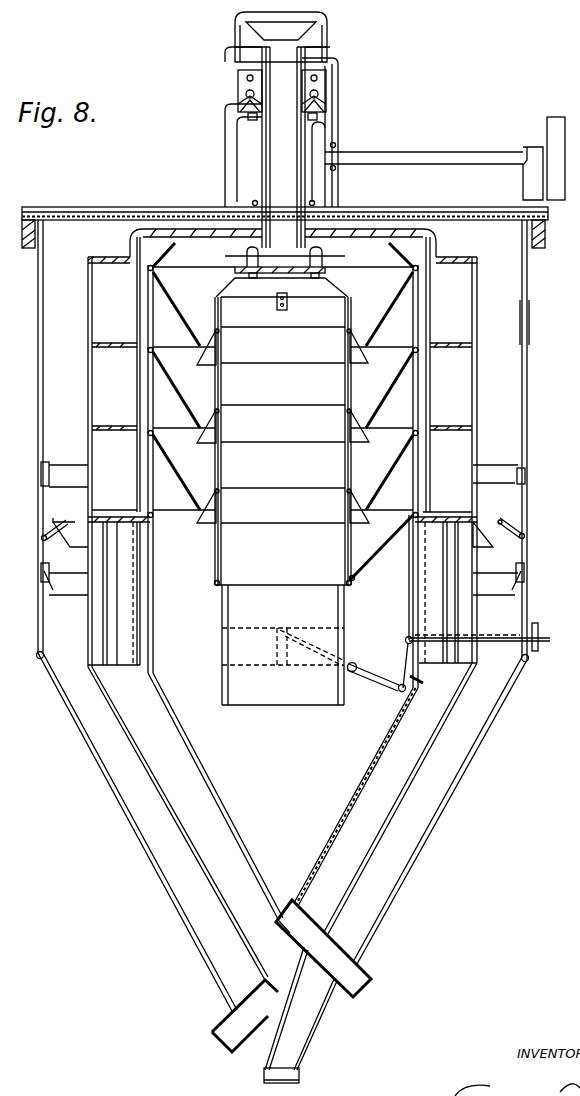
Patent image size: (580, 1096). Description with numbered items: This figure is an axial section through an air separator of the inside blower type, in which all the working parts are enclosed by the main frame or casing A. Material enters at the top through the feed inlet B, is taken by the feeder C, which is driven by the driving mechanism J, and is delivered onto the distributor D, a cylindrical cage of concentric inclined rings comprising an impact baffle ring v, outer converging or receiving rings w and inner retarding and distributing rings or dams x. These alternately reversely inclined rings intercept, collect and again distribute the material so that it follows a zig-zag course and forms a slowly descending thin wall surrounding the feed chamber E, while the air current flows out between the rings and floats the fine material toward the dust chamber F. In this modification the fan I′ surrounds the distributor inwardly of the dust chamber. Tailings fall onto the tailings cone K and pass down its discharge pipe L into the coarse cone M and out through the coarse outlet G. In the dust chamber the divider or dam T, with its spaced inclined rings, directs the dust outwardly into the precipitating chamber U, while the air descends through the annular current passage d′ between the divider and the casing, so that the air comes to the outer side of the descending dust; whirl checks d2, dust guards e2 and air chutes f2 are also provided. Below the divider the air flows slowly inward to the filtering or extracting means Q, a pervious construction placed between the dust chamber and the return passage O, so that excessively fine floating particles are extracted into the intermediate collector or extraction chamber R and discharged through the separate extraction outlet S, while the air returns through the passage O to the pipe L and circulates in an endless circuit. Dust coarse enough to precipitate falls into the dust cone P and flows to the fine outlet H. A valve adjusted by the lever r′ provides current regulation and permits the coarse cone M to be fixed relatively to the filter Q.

The feed inlet B is at (276, 37).
The driving mechanism J is at (445, 158).
The feeder C is at (287, 262).
The impact baffle ring v is at (392, 262).
The outer converging or receiving rings w is at (397, 306).
The dust chamber F is at (289, 462).
The whirl checks d2 is at (522, 322).
The inner retarding and distributing rings or dams x is at (352, 350).
The distributor D is at (284, 374).
The fan I′ is at (282, 386).
The main frame or casing A is at (527, 390).
The dust guards e2 is at (527, 478).
The divider or dam T is at (273, 521).
The annular current passage d′ is at (527, 518).
The feed chamber E is at (283, 528).
The tailings cone K is at (384, 549).
The discharge pipe L is at (262, 586).
The filtering or extracting means Q is at (409, 578).
The return passage O is at (419, 630).
The lever r′ is at (344, 698).
The supplemental or intermediate collector or extraction chamber R is at (356, 797).
The dust cone P is at (400, 798).
The precipitating chamber U is at (294, 593).
The air chutes f2 is at (520, 585).
The coarse cone M is at (196, 823).
The coarse outlet G is at (371, 985).
The extraction outlet S is at (217, 1047).
The fine outlet H is at (299, 1077).